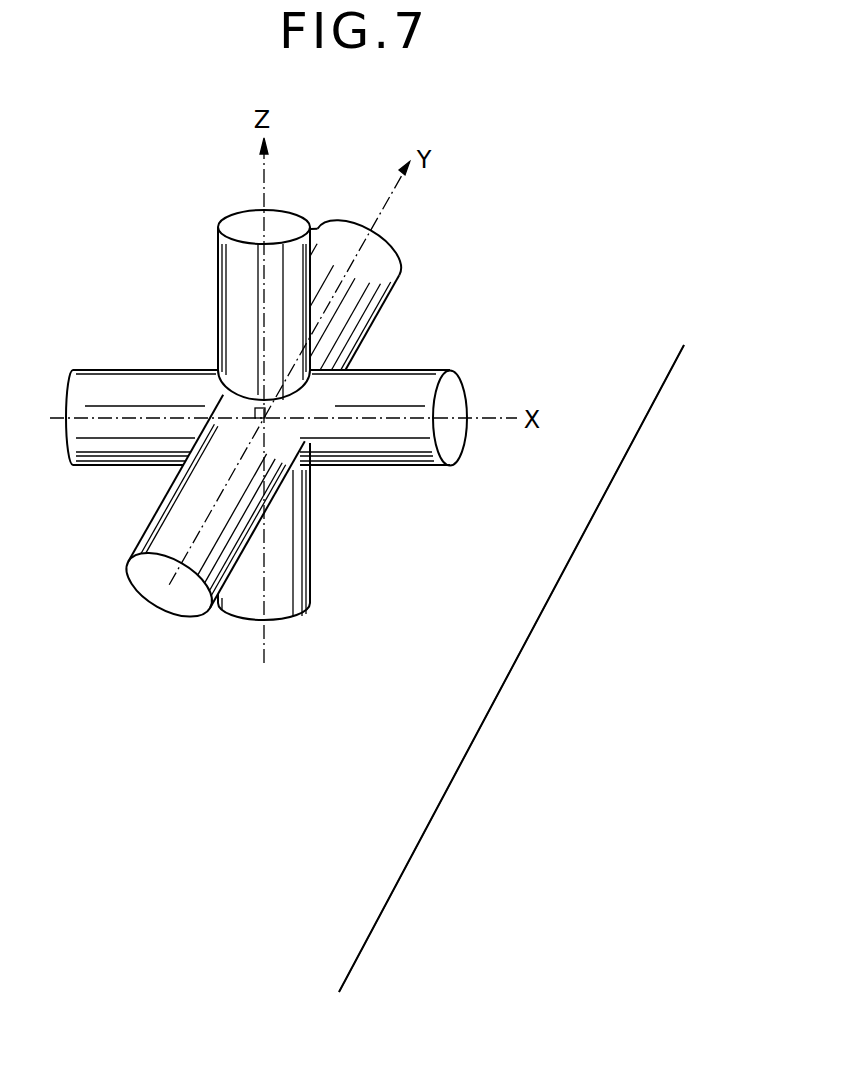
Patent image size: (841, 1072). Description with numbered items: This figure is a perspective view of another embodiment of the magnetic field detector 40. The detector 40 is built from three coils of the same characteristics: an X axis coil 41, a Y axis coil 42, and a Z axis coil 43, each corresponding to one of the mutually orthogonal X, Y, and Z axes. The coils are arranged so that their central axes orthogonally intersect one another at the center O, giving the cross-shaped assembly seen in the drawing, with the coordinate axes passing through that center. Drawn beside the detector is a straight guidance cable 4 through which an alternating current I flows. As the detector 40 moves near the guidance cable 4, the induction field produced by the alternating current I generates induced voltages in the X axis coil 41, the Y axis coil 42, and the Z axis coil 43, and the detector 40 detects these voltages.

The magnetic field detector 40 is at (106, 368).
The X axis coil 41 is at (423, 453).
The Y axis coil 42 is at (168, 530).
The Z axis coil 43 is at (214, 262).
The center O is at (300, 476).
The guidance cable 4 is at (509, 677).
The alternating current I is at (511, 668).